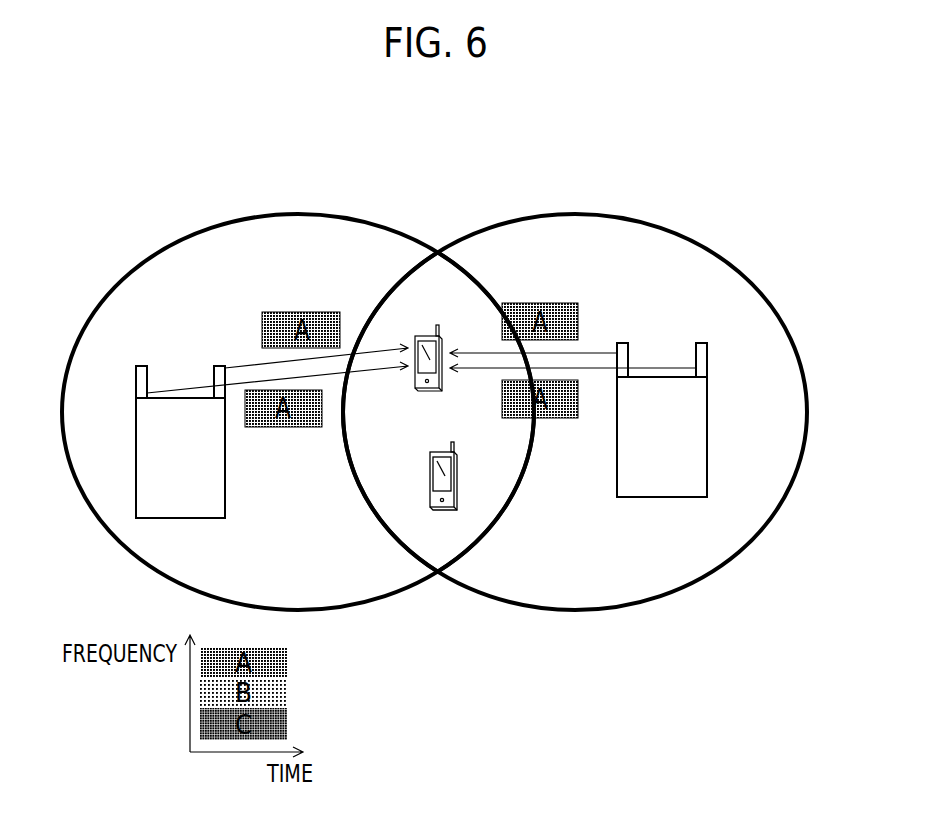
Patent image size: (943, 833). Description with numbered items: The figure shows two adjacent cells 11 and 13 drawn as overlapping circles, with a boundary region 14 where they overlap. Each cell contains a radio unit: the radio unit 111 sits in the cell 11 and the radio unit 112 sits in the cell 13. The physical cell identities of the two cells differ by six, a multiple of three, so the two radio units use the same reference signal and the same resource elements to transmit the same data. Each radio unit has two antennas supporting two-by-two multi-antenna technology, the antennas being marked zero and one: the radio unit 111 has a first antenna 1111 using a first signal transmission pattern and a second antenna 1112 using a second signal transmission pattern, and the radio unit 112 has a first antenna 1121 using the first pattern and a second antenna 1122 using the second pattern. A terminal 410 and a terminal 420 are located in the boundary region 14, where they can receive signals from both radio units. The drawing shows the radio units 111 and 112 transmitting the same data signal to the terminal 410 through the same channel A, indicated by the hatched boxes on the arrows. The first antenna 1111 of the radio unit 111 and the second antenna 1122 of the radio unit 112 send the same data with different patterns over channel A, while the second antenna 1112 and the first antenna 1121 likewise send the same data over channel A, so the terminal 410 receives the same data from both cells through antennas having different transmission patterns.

The cell 11 is at (273, 212).
The cell 13 is at (597, 213).
The boundary region 14 is at (400, 525).
The radio unit 111 is at (226, 491).
The first antenna 1111 is at (136, 374).
The second antenna 1112 is at (213, 374).
The radio unit 112 is at (707, 442).
The first antenna 1121 is at (628, 353).
The second antenna 1122 is at (707, 360).
The terminal 410 is at (423, 333).
The terminal 420 is at (430, 478).